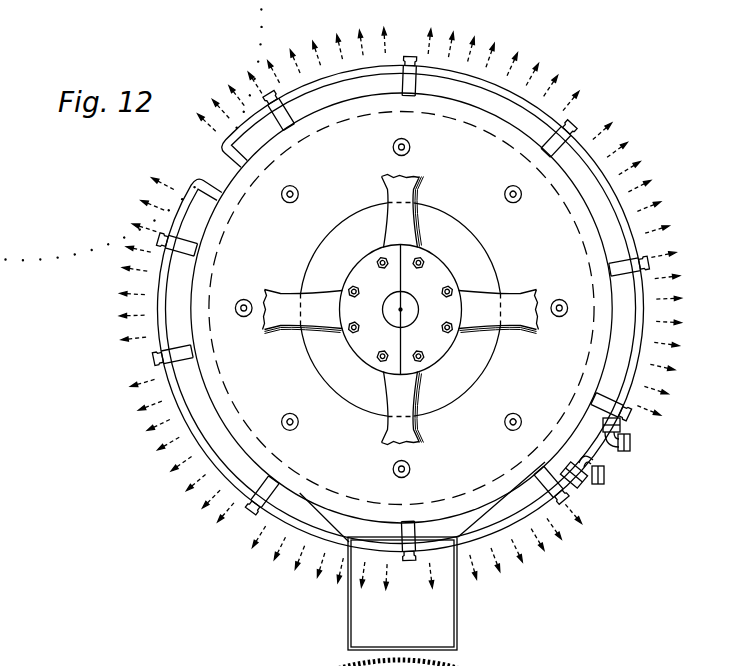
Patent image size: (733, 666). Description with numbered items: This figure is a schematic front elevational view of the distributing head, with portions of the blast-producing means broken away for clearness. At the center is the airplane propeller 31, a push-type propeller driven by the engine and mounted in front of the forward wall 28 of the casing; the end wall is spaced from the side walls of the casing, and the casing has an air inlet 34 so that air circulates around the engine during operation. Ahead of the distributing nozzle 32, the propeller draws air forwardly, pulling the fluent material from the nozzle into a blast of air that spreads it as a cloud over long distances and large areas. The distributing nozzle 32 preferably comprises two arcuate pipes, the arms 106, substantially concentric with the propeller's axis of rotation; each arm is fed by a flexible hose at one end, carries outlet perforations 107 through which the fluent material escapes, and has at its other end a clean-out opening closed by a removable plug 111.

The arms of the distributing nozzle 106 is at (190, 441).
The distributing nozzle 32 is at (156, 323).
The outlet perforations 107 is at (162, 276).
The forward wall 28 is at (180, 337).
The airplane propeller 31 is at (386, 432).
The air inlet 34 is at (357, 630).
The removable plug 111 is at (630, 448).